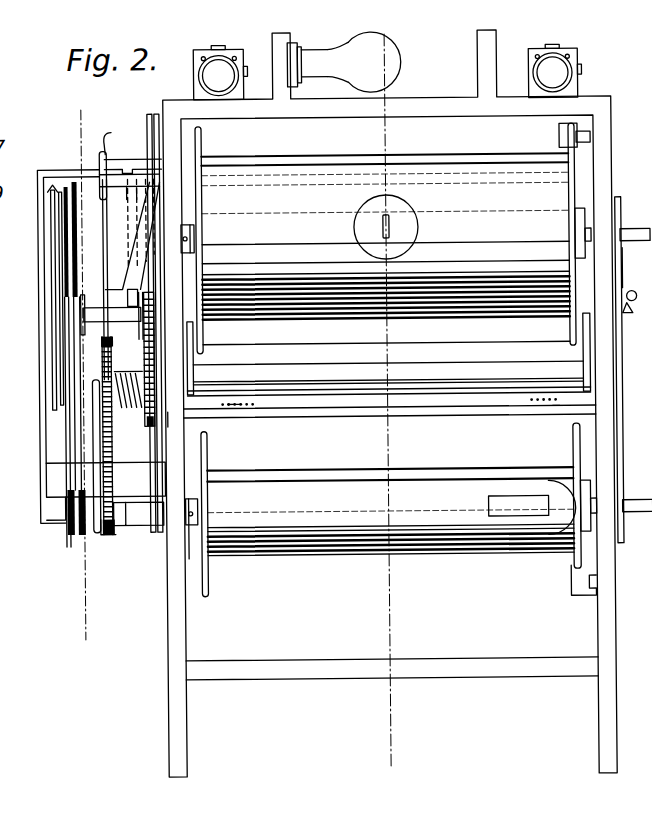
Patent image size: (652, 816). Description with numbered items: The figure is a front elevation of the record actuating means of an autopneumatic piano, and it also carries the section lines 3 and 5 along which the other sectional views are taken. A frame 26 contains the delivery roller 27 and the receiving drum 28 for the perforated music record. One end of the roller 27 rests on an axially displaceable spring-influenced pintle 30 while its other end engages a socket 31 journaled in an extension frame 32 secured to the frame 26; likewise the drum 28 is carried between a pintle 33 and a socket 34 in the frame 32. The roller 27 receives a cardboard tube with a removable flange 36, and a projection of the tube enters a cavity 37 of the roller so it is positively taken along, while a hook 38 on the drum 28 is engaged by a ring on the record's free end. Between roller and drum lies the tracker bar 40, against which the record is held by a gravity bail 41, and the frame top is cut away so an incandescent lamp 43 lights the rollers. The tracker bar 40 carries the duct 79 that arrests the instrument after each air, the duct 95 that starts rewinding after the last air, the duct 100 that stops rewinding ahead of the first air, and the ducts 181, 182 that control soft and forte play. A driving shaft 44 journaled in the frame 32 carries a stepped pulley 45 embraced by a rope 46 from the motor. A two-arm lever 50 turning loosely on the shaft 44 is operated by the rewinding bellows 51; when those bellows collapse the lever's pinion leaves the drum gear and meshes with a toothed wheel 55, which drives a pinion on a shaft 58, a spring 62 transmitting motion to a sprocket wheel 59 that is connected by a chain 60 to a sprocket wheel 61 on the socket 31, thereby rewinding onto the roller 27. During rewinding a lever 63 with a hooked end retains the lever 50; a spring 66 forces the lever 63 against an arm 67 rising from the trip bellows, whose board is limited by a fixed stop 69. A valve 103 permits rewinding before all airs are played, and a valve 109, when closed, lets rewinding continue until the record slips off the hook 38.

The frame 26 is at (176, 650).
The section line 5— 5 is at (389, 398).
The valve 103 is at (227, 53).
The valve 109 is at (571, 50).
The incandescent lamp 43 is at (405, 80).
The receiving drum 28 is at (393, 238).
The hook 38 is at (394, 224).
The extension frame 32 is at (195, 364).
The gravity bail 41 is at (444, 394).
The tracker bar 40 is at (390, 407).
The toothed wheel 55 is at (168, 418).
The duct 79 is at (556, 408).
The duct 95 is at (222, 402).
The duct 100 is at (538, 410).
The duct 181 is at (238, 405).
The duct 182 is at (232, 404).
The socket 34 is at (197, 240).
The delivery roller 27 is at (379, 511).
The flange 36 is at (574, 447).
The cavity 37 is at (542, 507).
The pintle 33 is at (631, 232).
The pintle 30 is at (644, 514).
The section line 3— 3 is at (83, 375).
The stepped pulley 45 is at (55, 391).
The driving shaft 44 is at (90, 313).
The rope 46 is at (72, 543).
The shaft 58 is at (88, 400).
The chain 60 is at (110, 479).
The sprocket wheel 59 is at (113, 440).
The sprocket wheel 61 is at (100, 531).
The spring 62 is at (128, 373).
The rewinding bellows 51 is at (131, 316).
The fixed stop 69 is at (103, 190).
The arm 67 is at (100, 157).
The lever 63 is at (100, 137).
The spring 66 is at (150, 164).
The two-arm lever 50 is at (150, 130).
The socket 31 is at (188, 527).